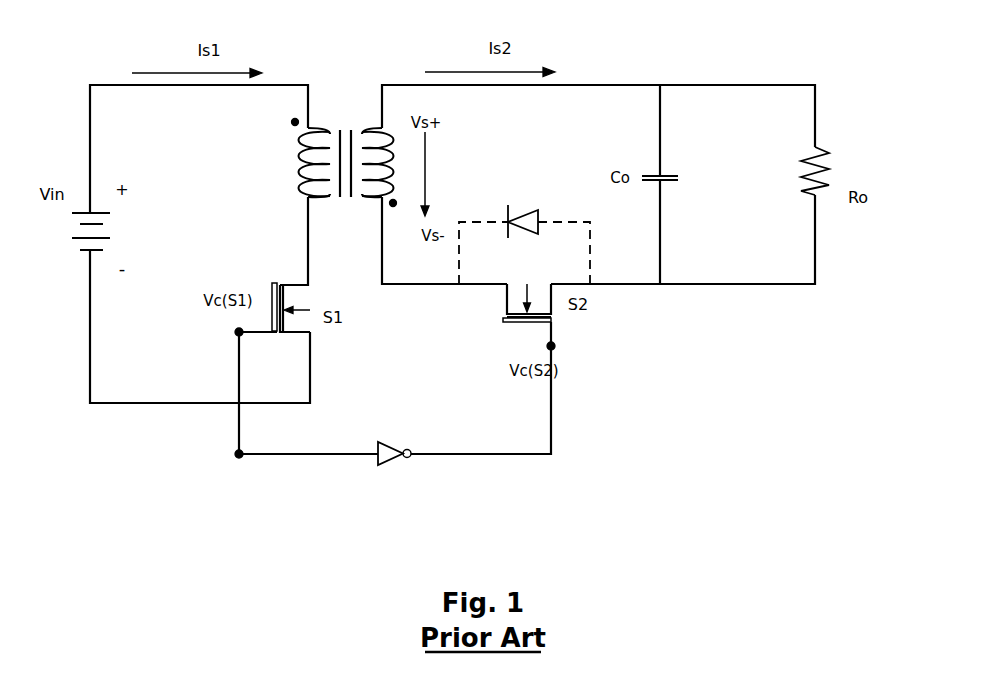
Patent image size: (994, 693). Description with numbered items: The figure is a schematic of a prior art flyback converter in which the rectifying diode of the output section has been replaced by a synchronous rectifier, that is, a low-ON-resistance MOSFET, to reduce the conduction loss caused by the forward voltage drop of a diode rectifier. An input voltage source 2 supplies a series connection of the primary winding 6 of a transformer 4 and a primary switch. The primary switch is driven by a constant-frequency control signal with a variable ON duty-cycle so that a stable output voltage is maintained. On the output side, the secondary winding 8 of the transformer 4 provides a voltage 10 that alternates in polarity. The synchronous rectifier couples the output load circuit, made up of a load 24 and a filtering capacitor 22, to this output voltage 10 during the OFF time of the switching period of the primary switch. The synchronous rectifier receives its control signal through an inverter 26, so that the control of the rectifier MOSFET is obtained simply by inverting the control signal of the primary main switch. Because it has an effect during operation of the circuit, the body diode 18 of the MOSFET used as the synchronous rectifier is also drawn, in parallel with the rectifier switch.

The input voltage source 2 is at (63, 255).
The transformer 4 is at (337, 107).
The primary winding 6 is at (288, 159).
The secondary winding 8 is at (393, 119).
The voltage 10 is at (450, 170).
The body diode 18 is at (543, 199).
The filtering capacitor 22 is at (678, 164).
The load 24 is at (883, 138).
The inverter 26 is at (352, 484).